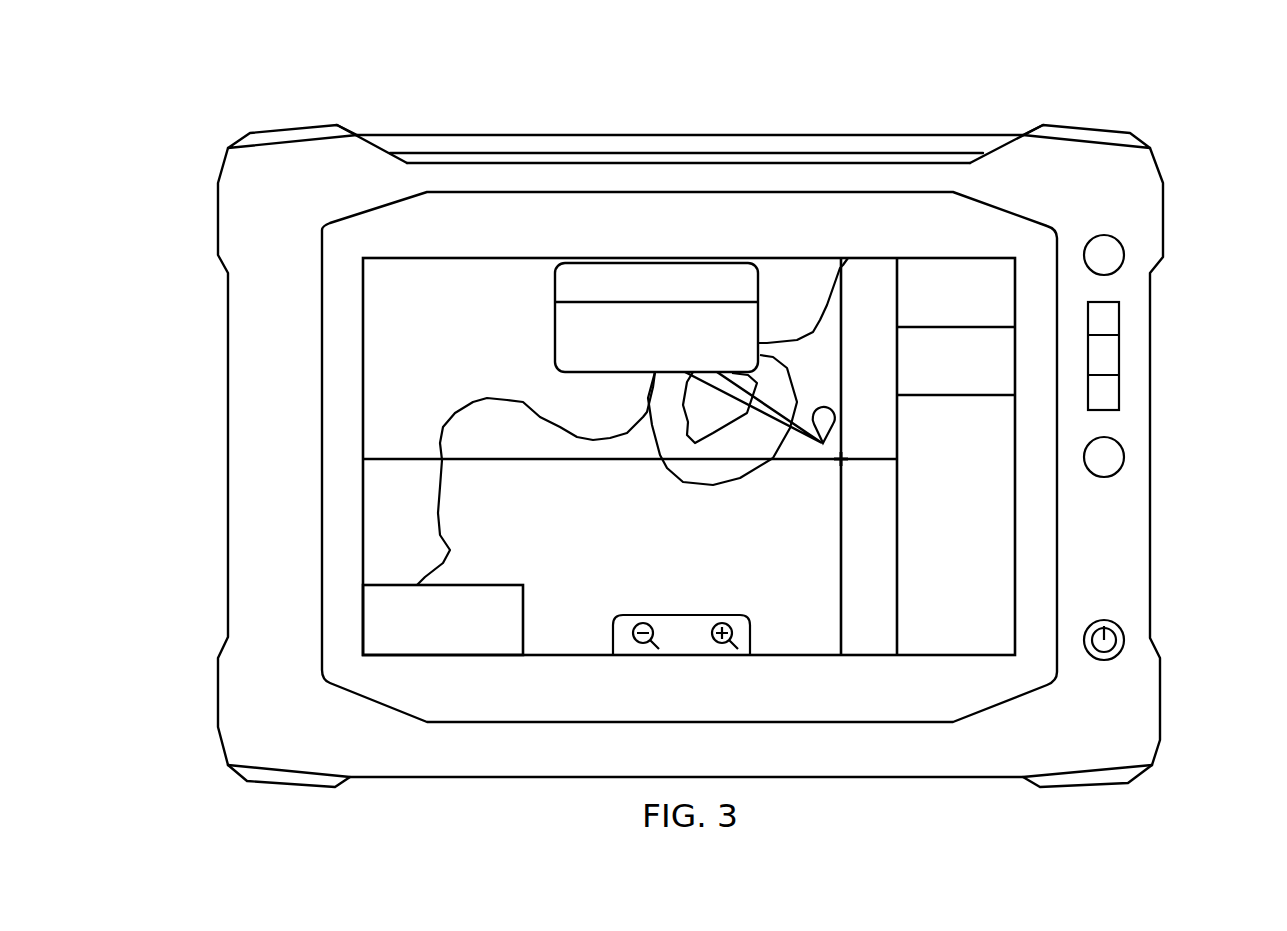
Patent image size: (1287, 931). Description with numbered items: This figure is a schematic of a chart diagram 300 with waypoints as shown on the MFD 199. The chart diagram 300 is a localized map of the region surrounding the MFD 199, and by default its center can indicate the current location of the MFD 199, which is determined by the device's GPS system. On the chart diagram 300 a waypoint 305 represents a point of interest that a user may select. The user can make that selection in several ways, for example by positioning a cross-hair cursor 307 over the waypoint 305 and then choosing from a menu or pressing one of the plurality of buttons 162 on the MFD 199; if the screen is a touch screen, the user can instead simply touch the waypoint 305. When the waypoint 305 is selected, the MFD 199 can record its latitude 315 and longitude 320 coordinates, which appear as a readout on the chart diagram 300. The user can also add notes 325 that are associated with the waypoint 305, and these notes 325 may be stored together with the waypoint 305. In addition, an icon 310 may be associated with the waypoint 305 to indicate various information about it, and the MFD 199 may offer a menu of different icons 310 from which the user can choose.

The MFD 199 is at (513, 112).
The buttons 162 is at (1120, 397).
The chart diagram 300 is at (382, 363).
The waypoint 305 is at (840, 446).
The cross-hair cursor 307 is at (842, 528).
The icon 310 is at (834, 402).
The latitude 315 is at (363, 597).
The longitude 320 is at (363, 620).
The notes 325 is at (555, 322).